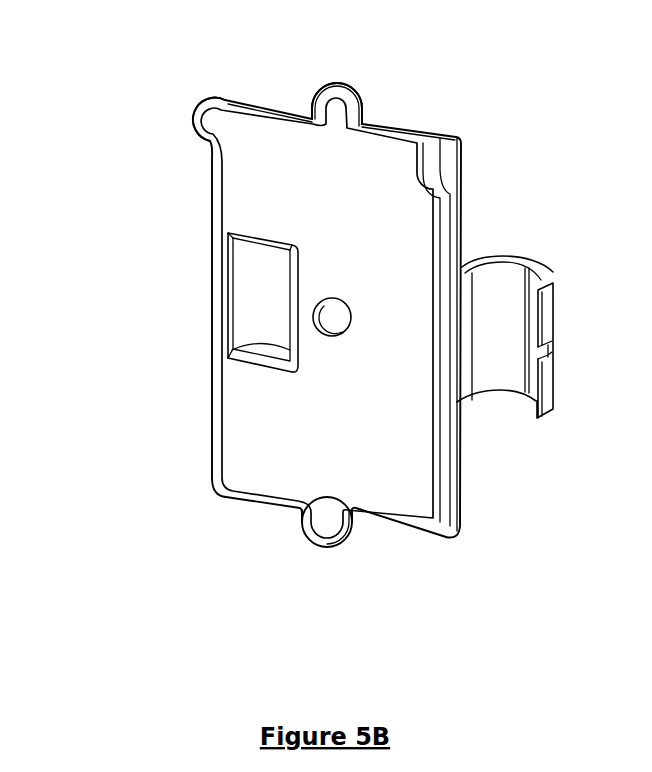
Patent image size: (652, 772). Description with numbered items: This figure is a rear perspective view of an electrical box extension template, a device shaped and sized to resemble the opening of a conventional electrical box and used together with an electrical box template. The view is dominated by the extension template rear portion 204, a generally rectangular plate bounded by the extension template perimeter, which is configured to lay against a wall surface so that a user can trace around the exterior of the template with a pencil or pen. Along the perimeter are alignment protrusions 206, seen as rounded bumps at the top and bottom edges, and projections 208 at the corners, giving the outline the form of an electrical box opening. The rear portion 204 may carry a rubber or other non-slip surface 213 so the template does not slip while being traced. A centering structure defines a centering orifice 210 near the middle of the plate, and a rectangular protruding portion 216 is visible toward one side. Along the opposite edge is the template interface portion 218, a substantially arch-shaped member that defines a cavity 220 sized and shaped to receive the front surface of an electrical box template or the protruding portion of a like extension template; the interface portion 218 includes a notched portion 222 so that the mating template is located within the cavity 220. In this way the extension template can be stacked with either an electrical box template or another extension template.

The extension template rear portion 204 is at (327, 313).
The alignment protrusions 206 is at (289, 323).
The projections 208 is at (153, 134).
The centering orifice 210 is at (344, 367).
The non-slip surface 213 is at (317, 318).
The protruding portion 216 is at (217, 307).
The template interface portion 218 is at (589, 417).
The cavity 220 is at (505, 382).
The notched portion 222 is at (588, 352).